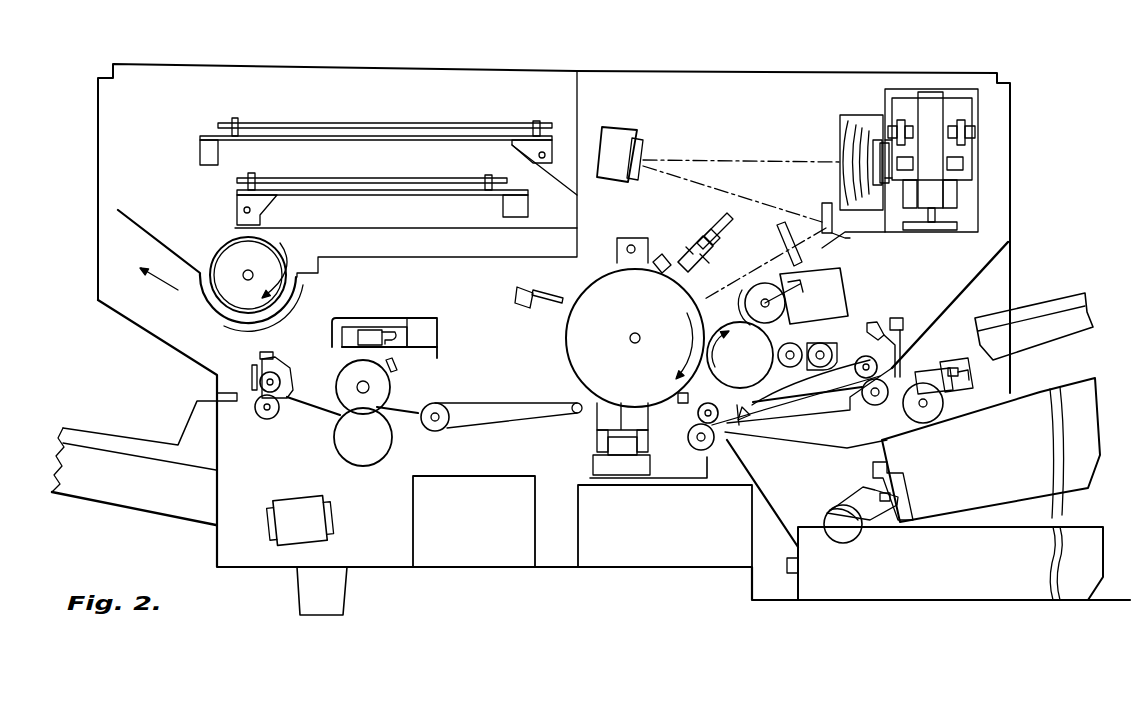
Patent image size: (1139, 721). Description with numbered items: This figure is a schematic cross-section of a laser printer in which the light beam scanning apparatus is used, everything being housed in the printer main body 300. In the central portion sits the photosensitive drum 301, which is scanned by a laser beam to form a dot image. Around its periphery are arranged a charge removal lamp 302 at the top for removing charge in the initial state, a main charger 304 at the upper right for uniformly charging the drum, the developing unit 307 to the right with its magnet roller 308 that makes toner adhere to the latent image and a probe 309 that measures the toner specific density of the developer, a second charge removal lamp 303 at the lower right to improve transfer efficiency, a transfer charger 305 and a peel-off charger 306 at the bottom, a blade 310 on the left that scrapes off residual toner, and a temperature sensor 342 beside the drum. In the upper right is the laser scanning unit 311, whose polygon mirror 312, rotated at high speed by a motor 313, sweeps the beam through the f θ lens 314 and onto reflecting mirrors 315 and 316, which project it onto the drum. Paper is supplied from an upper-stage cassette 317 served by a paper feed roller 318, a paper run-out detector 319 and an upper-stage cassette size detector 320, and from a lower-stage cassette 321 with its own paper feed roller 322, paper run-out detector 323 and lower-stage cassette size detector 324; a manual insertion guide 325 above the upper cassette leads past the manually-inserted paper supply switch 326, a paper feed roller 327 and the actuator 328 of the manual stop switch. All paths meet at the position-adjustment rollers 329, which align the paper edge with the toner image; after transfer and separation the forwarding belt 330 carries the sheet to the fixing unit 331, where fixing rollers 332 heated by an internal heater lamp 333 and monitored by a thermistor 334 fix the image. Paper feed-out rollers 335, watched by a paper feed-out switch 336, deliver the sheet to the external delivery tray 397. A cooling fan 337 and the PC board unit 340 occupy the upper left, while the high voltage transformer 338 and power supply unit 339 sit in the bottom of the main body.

The printer main body 300 is at (98, 79).
The photosensitive drum 301 is at (573, 352).
The charge removal lamp 302 is at (638, 237).
The charge removal lamp 303 is at (678, 397).
The main charger 304 is at (713, 240).
The transfer charger 305 is at (638, 478).
The peel-off charger 306 is at (597, 440).
The developing unit 307 is at (845, 317).
The magnet roller 308 is at (757, 366).
The probe 309 is at (795, 283).
The blade 310 is at (570, 300).
The laser scanning unit 311 is at (955, 89).
The polygon mirror 312 is at (960, 165).
The motor 313 is at (957, 137).
The f θ lens 314 is at (845, 127).
The reflecting mirror 315 is at (643, 140).
The reflecting mirror 316 is at (825, 210).
The upper-stage cassette 317 is at (1020, 473).
The paper feed roller 318 is at (937, 413).
The paper run-out detector 319 is at (973, 390).
The upper-stage cassette size detector 320 is at (903, 520).
The lower-stage cassette 321 is at (1030, 572).
The paper feed roller 322 is at (841, 533).
The paper run-out detector 323 is at (885, 520).
The lower-stage cassette size detector 324 is at (793, 575).
The manual insertion guide 325 is at (1098, 260).
The manually-inserted paper supply switch 326 is at (895, 320).
The paper feed roller 327 is at (884, 395).
The actuator of manual stop switch 328 is at (745, 422).
The position-adjustment rollers 329 is at (716, 446).
The forwarding belt 330 is at (538, 422).
The fixing unit 331 is at (370, 318).
The fixing rollers 332 is at (343, 452).
The heater lamp 333 is at (370, 395).
The thermistor 334 is at (395, 370).
The paper feed-out rollers 335 is at (255, 407).
The paper feed-out switch 336 is at (260, 352).
The cooling fan 337 is at (227, 262).
The high voltage transformer 338 is at (442, 545).
The power supply unit 339 is at (673, 538).
The PC board unit 340 is at (323, 178).
The temperature sensor 342 is at (660, 258).
The delivery tray 397 is at (93, 482).